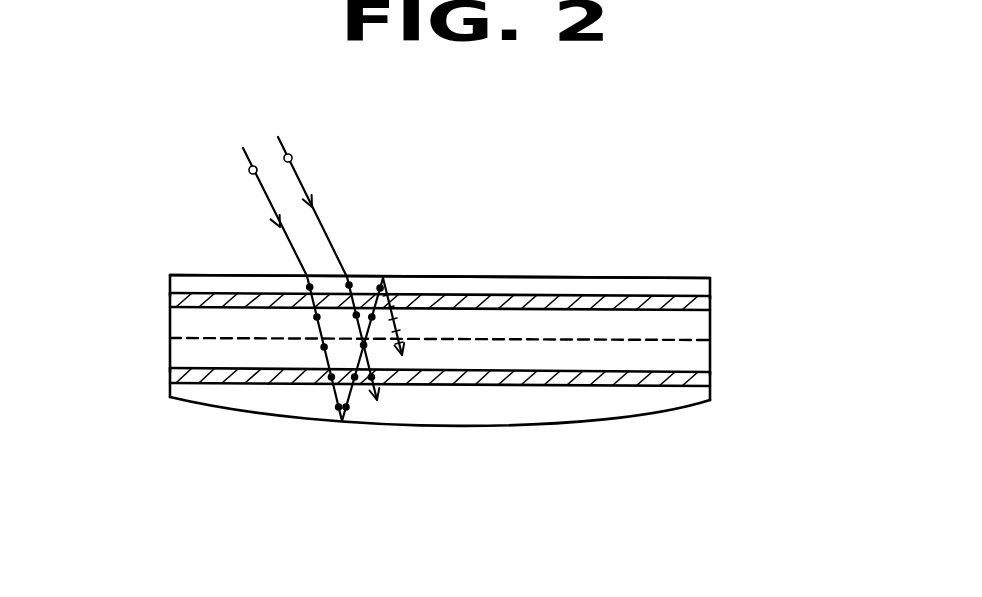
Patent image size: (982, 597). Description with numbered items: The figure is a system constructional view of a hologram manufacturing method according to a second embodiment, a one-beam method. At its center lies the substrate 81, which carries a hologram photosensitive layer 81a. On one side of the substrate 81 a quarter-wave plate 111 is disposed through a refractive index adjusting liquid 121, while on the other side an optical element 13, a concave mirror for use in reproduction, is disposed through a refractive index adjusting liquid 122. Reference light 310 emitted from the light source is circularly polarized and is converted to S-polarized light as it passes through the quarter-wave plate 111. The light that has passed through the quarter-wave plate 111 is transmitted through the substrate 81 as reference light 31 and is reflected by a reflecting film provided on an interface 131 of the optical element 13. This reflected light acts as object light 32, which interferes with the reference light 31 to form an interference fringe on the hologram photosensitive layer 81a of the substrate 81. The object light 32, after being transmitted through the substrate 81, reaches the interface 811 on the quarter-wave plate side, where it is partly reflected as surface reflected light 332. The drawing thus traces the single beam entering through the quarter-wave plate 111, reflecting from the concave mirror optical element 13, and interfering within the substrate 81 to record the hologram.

The quarter-wave plate 111 is at (467, 217).
The interface 811 is at (630, 277).
The refractive index adjusting liquid 121 is at (172, 297).
The substrate 81 is at (487, 358).
The hologram photosensitive layer 81a is at (658, 343).
The refractive index adjusting liquid 122 is at (172, 372).
The optical element 13 is at (440, 465).
The interface 131 is at (490, 427).
The reference light 310 is at (298, 177).
The reference light 31 is at (358, 283).
The object light 32 is at (352, 395).
The surface reflected light 332 is at (438, 276).